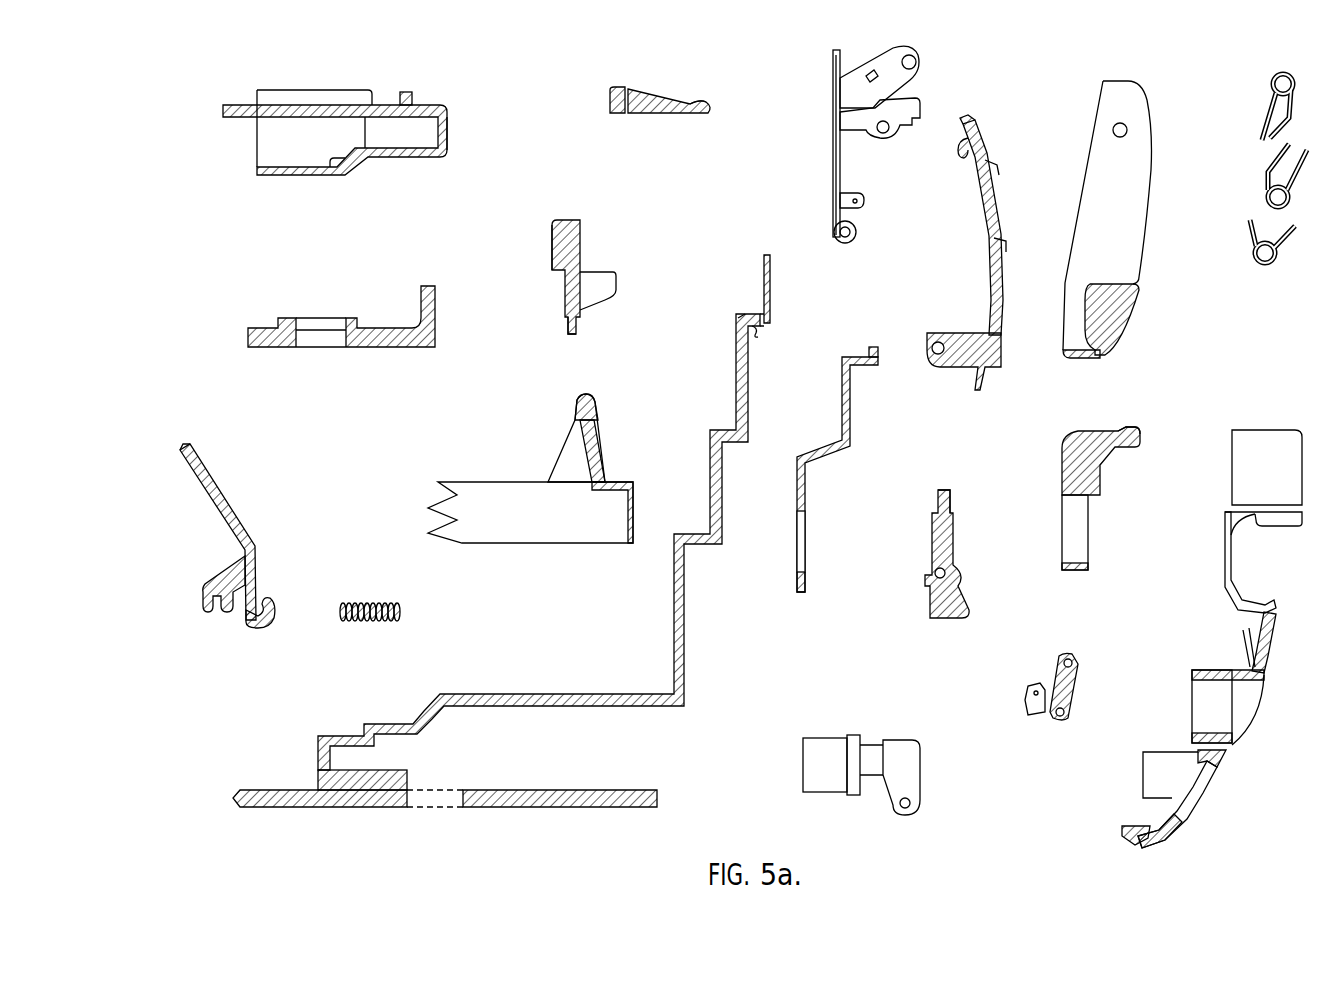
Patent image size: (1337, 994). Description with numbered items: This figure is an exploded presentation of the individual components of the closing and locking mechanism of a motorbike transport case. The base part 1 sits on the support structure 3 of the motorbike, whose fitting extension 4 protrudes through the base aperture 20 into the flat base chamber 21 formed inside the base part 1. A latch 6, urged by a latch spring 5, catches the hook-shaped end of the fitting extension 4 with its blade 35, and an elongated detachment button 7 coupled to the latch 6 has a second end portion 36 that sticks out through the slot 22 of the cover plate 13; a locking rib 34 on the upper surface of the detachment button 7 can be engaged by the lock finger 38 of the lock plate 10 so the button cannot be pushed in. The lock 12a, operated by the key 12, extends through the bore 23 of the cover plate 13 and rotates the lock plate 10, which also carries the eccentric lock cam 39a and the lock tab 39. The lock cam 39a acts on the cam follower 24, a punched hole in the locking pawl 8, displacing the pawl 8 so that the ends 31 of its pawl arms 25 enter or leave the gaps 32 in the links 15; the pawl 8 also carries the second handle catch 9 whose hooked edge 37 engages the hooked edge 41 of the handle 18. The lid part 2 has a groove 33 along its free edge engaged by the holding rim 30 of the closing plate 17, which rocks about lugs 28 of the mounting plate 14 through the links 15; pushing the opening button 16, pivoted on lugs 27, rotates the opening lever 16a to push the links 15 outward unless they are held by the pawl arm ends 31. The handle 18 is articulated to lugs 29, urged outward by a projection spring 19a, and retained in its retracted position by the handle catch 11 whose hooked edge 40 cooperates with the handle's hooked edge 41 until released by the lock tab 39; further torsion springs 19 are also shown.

The base part 1 is at (367, 808).
The lid part 2 is at (206, 458).
The support structure 3 is at (571, 546).
The fitting extension 4 is at (601, 440).
The latch spring 5 is at (372, 622).
The latch 6 is at (290, 324).
The detachment button 7 is at (372, 156).
The locking pawl 8 is at (795, 594).
The second handle catch 9 is at (627, 112).
The lock plate 10 is at (552, 272).
The handle catch 11 is at (1093, 498).
The key 12 is at (883, 738).
The lock 12a is at (803, 752).
The cover plate 13 is at (1229, 506).
The mounting plate 14 is at (833, 228).
The link 15 is at (1057, 732).
The opening button 16 is at (927, 598).
The opening lever 16a is at (950, 497).
The closing plate 17 is at (961, 339).
The handle 18 is at (1082, 186).
The torsion spring 19 is at (1264, 170).
The projection spring 19a is at (1262, 112).
The base aperture 20 is at (422, 808).
The base chamber 21 is at (512, 750).
The slot 22 is at (1190, 790).
The bore 23 is at (1206, 705).
The cam follower 24 is at (805, 540).
The pawl arm 25 is at (850, 405).
The lug 27 is at (858, 232).
The lug 28 is at (866, 140).
The lug 29 is at (921, 62).
The holding rim 30 is at (960, 150).
The pawl arm end 31 is at (878, 347).
The gap 32 is at (1036, 716).
The groove 33 is at (264, 590).
The locking rib 34 is at (412, 92).
The blade 35 is at (316, 333).
The second end portion 36 is at (450, 130).
The hooked edge 37 is at (700, 100).
The lock finger 38 is at (578, 322).
The lock tab 39 is at (596, 270).
The lock cam 39a is at (550, 238).
The hooked edge 40 is at (1128, 427).
The hooked edge 41 is at (1066, 361).